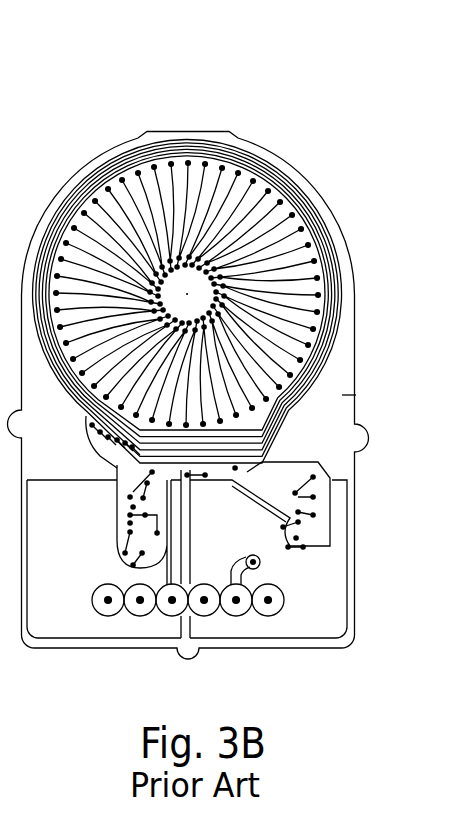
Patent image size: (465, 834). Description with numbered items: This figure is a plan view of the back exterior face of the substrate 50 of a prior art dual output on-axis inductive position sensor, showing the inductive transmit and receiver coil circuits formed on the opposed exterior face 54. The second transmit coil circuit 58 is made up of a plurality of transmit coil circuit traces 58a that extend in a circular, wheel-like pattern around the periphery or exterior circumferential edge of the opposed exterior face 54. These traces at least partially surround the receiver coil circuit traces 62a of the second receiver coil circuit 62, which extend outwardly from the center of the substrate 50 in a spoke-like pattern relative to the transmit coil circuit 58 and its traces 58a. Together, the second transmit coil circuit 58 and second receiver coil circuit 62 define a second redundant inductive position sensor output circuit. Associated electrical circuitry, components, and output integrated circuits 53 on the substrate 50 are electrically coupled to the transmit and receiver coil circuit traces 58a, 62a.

The substrate 50 is at (81, 648).
The output integrated circuits 53 is at (242, 593).
The opposed exterior face 54 is at (345, 402).
The second transmit coil circuit 58 is at (246, 150).
The transmit coil circuit traces 58a is at (128, 152).
The second receiver coil circuit 62 is at (257, 202).
The receiver coil circuit traces 62a is at (212, 183).